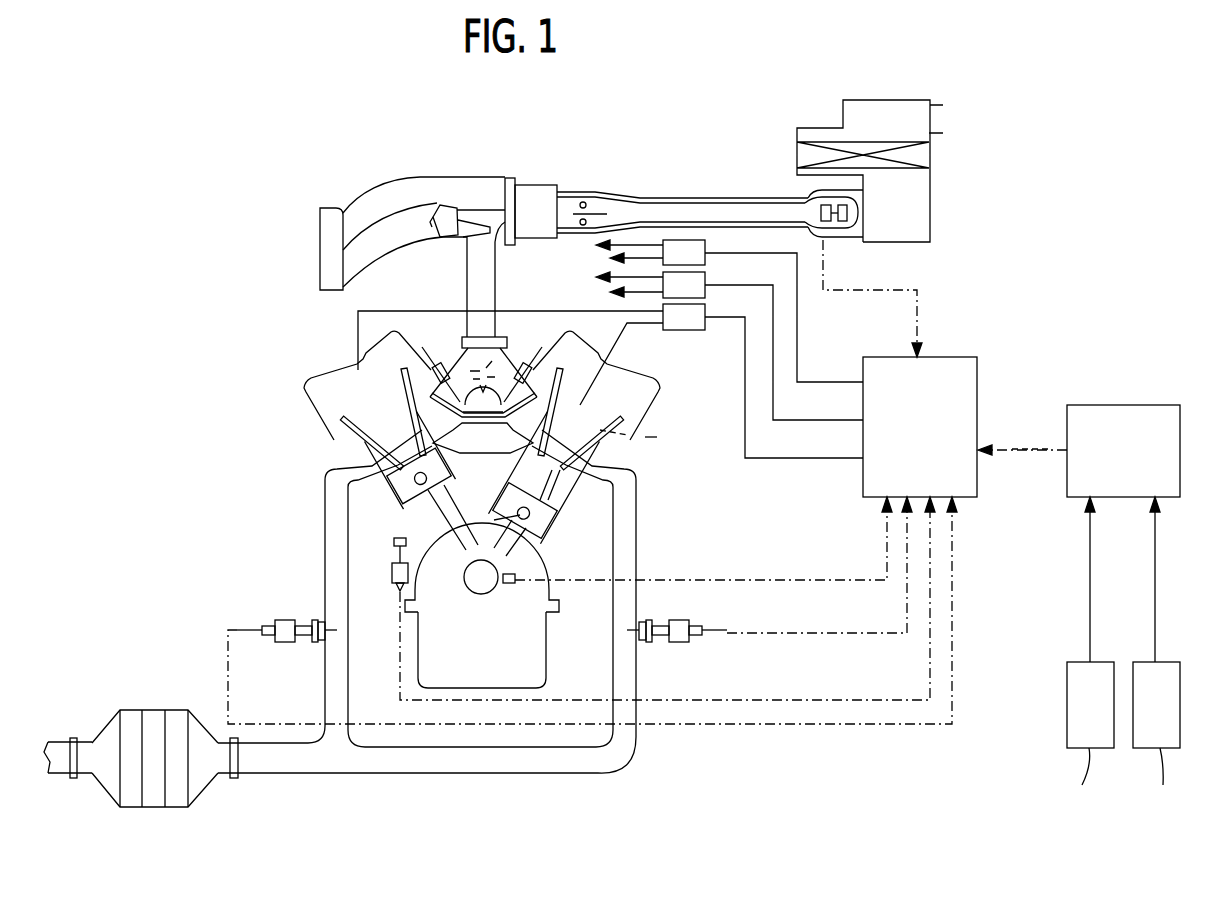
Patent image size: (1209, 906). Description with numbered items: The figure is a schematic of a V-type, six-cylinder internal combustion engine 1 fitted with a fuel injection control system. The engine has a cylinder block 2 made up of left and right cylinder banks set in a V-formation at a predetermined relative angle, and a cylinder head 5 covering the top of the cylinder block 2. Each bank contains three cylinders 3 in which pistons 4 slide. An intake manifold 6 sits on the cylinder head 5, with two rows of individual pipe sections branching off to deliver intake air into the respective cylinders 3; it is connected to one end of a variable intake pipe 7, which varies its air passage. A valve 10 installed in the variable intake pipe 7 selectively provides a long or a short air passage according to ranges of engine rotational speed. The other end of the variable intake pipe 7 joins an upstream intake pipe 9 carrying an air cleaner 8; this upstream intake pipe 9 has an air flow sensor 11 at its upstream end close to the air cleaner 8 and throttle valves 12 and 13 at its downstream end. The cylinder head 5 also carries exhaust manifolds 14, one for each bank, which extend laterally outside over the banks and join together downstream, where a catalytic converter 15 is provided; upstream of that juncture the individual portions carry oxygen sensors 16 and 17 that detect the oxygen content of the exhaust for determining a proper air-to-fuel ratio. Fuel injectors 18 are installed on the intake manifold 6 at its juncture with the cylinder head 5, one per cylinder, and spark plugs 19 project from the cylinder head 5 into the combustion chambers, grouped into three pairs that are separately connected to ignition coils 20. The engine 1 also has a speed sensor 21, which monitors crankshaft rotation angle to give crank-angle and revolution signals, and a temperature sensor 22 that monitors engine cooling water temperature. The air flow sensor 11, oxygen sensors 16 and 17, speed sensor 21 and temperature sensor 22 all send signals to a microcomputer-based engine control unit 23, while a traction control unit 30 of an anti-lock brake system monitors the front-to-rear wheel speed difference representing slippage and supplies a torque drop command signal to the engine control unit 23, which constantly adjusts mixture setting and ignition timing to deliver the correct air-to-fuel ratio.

The internal combustion engine 1 is at (296, 512).
The cylinder block 2 is at (418, 652).
The cylinders 3 is at (572, 496).
The pistons 4 is at (552, 534).
The cylinder head 5 is at (655, 399).
The intake manifold 6 is at (457, 340).
The variable intake pipe 7 is at (395, 180).
The air cleaner 8 is at (930, 215).
The upstream intake pipe 9 is at (699, 195).
The valve 10 is at (478, 203).
The air flow sensor 11 is at (841, 232).
The throttle valve 12 is at (586, 232).
The throttle valve 13 is at (598, 192).
The exhaust manifolds 14 is at (435, 775).
The catalytic converter 15 is at (157, 808).
The oxygen sensor 16 is at (270, 625).
The oxygen sensor 17 is at (692, 642).
The fuel injectors 18 is at (522, 347).
The spark plugs 19 is at (516, 419).
The ignition coils 20 is at (712, 260).
The speed sensor 21 is at (518, 584).
The temperature sensor 22 is at (398, 566).
The engine control unit 23 is at (906, 446).
The traction control unit 30 is at (1109, 470).